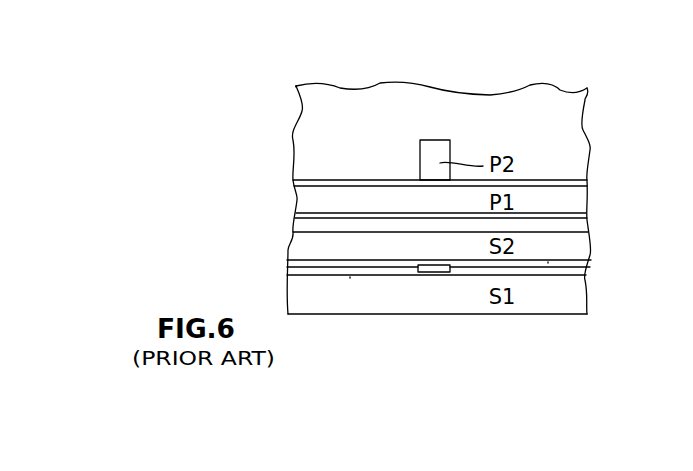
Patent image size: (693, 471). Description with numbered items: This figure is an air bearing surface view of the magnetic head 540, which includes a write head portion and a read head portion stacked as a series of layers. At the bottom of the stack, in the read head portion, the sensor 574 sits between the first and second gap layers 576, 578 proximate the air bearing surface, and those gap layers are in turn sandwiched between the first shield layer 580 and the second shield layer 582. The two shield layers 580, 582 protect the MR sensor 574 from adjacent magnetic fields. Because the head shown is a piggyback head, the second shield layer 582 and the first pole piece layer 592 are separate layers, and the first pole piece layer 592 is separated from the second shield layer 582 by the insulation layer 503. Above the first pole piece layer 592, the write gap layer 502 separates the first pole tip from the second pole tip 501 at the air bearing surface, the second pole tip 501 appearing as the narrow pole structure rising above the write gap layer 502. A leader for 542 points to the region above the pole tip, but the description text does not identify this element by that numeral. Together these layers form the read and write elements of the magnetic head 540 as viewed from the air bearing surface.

The magnetic head 540 is at (605, 102).
The upper insulation/overcoat region 542 is at (302, 111).
The second pole tip 501 is at (433, 148).
The write gap layer 502 is at (357, 180).
The first pole piece layer 592 is at (302, 198).
The insulation layer 503 is at (578, 227).
The second shield layer 582 is at (293, 250).
The sensor 574 is at (432, 272).
The first shield layer 580 is at (577, 298).
The first gap layer 576 is at (350, 277).
The second gap layer 578 is at (548, 262).